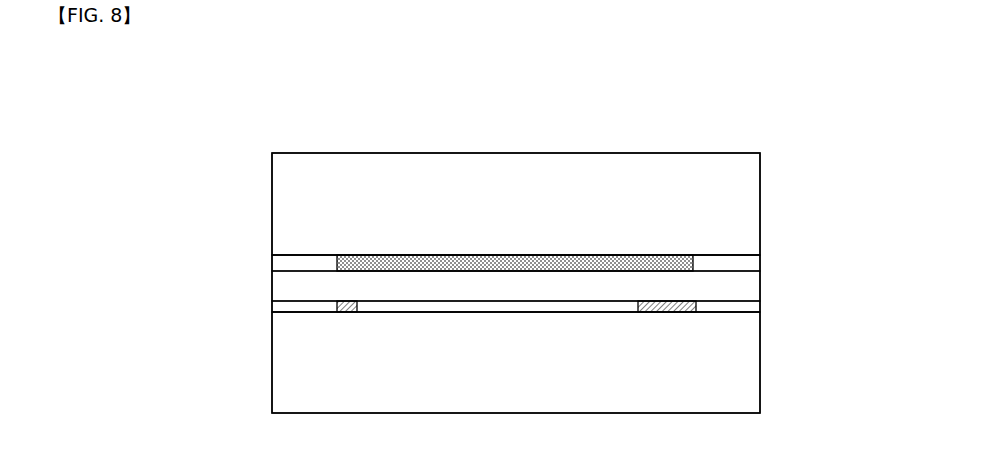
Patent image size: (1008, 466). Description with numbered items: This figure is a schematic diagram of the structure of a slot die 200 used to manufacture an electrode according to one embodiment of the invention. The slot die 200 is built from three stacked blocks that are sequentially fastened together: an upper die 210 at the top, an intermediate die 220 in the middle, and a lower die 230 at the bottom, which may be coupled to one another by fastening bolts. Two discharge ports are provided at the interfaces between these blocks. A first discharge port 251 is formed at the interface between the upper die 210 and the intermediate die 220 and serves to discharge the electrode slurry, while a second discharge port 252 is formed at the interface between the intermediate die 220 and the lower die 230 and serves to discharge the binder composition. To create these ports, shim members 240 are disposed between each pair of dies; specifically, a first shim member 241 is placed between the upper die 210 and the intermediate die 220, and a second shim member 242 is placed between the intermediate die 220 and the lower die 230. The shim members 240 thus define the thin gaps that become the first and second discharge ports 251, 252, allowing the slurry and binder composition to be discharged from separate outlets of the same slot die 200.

The slot die 200 is at (167, 120).
The upper die 210 is at (761, 203).
The intermediate die 220 is at (761, 286).
The lower die 230 is at (761, 352).
The shim members 240 is at (192, 267).
The first shim member 241 is at (293, 264).
The second shim member 242 is at (293, 305).
The first discharge port 251 is at (484, 262).
The second discharge port 252 is at (660, 318).